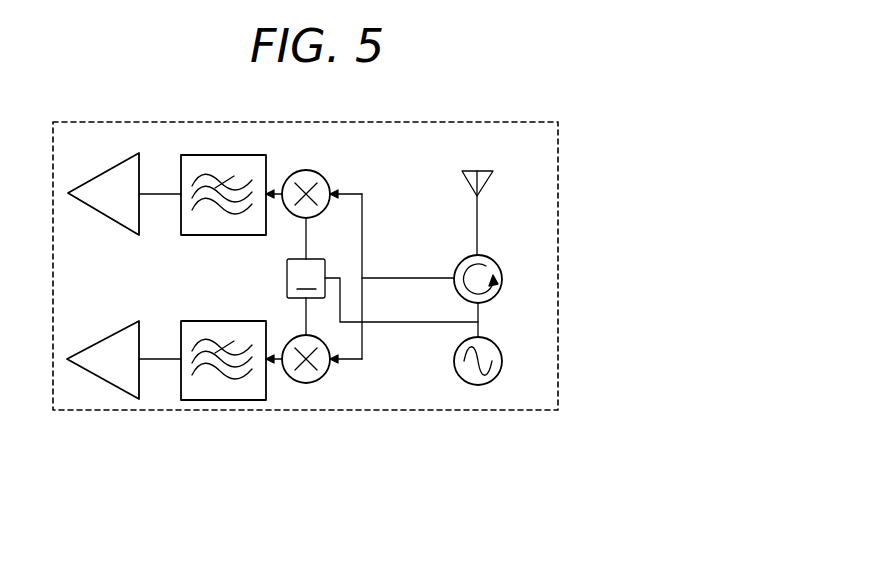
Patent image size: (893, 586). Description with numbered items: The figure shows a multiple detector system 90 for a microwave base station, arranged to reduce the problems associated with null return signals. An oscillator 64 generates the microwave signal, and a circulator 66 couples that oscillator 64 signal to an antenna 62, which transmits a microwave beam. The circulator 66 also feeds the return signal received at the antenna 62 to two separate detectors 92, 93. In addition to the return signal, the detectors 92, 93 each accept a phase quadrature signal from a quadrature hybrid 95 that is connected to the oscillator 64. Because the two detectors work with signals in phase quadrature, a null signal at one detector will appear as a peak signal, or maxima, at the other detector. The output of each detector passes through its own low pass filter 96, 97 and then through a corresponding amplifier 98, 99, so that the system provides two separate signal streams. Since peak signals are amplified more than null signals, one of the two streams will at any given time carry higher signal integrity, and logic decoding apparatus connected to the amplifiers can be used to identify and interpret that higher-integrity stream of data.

The multiple detector system 90 is at (456, 122).
The amplifier 98 is at (128, 154).
The low pass filter 96 is at (243, 154).
The detector 92 is at (323, 178).
The quadrature hybrid 95 is at (382, 276).
The detector 93 is at (322, 376).
The low pass filter 97 is at (243, 321).
The amplifier 99 is at (128, 321).
The antenna 62 is at (468, 176).
The circulator 66 is at (496, 261).
The oscillator 64 is at (499, 345).